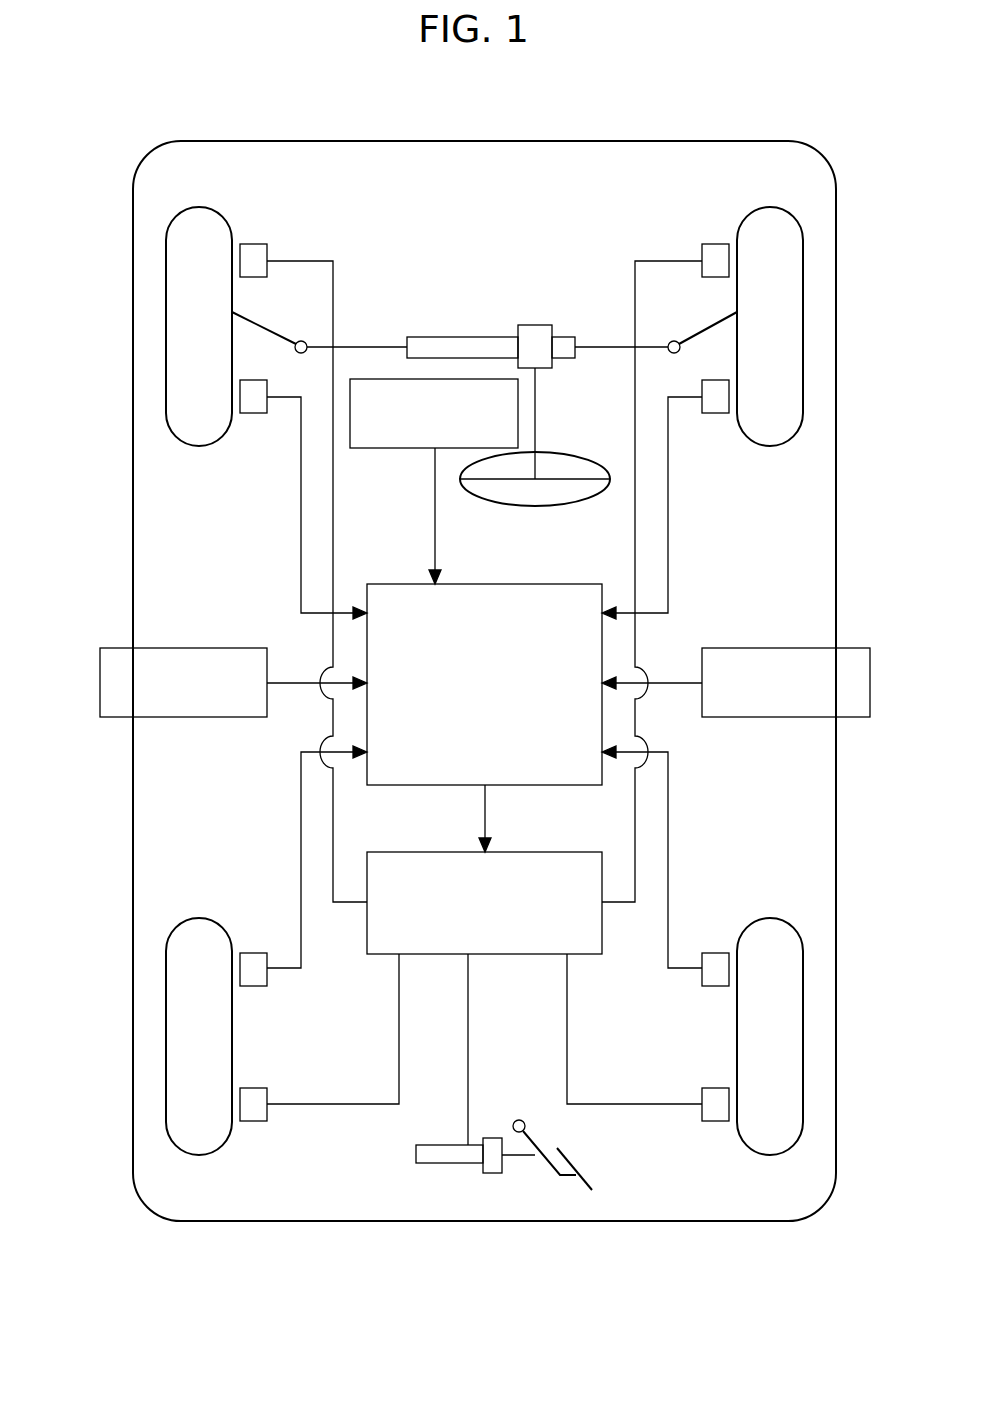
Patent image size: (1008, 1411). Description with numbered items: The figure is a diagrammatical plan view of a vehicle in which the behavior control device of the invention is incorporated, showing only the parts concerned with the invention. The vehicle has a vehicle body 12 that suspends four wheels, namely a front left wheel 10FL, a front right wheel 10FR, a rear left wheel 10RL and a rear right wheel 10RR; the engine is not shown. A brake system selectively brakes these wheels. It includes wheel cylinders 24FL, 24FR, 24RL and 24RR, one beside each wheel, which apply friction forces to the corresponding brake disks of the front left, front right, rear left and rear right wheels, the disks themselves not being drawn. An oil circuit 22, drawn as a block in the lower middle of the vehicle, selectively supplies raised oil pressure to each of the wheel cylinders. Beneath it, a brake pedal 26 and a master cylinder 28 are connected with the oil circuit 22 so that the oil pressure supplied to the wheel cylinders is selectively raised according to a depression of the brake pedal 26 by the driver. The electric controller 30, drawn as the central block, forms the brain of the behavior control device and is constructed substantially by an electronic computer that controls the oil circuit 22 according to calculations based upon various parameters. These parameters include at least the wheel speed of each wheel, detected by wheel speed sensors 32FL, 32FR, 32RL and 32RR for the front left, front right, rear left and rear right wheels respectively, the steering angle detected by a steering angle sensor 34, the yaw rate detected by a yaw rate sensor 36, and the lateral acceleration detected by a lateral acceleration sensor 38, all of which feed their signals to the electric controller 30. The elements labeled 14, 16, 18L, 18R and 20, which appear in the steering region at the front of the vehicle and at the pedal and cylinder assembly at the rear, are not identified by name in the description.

The front left wheel 10FL is at (166, 347).
The front right wheel 10FR is at (803, 347).
The rear left wheel 10RL is at (166, 1045).
The rear right wheel 10RR is at (803, 1047).
The vehicle body 12 is at (836, 585).
The steering wheel 14 is at (535, 506).
The rack and pinion steering gear 16 is at (526, 312).
The left tie rod 18L is at (258, 322).
The right tie rod 18R is at (713, 323).
The brake device 20 is at (481, 1168).
The oil circuit 22 is at (484, 998).
The front left wheel cylinder 24FL is at (255, 255).
The front right wheel cylinder 24FR is at (712, 255).
The rear left wheel cylinder 24RL is at (253, 1100).
The rear right wheel cylinder 24RR is at (714, 1098).
The brake pedal 26 is at (588, 1175).
The master cylinder 28 is at (436, 1163).
The electric controller 30 is at (484, 718).
The front left wheel speed sensor 32FL is at (256, 413).
The front right wheel speed sensor 32FR is at (716, 413).
The rear left wheel speed sensor 32RL is at (257, 962).
The rear right wheel speed sensor 32RR is at (712, 960).
The steering angle sensor 34 is at (390, 450).
The yaw rate sensor 36 is at (202, 648).
The lateral acceleration sensor 38 is at (770, 718).